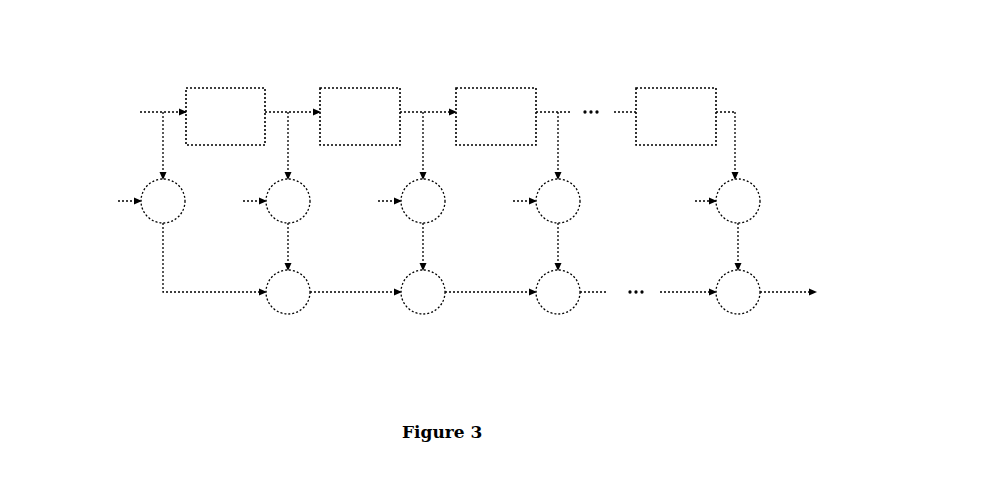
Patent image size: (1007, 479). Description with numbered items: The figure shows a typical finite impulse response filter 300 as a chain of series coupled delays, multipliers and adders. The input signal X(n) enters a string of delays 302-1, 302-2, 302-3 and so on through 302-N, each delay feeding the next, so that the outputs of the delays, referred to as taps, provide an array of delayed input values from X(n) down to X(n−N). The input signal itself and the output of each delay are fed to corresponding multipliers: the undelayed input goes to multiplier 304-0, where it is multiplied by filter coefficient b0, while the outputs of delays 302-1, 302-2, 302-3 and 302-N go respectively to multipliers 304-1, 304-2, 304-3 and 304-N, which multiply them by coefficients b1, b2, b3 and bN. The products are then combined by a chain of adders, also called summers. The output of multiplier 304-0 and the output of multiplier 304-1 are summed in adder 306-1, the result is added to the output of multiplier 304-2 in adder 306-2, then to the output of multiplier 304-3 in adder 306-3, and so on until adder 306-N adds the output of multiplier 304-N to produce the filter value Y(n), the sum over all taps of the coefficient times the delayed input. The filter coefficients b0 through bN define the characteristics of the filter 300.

The finite impulse response (FIR) filter 300 is at (87, 80).
The delay 302-1 is at (232, 88).
The delay 302-2 is at (360, 88).
The delay 302-3 is at (490, 88).
The delay 302-N is at (668, 88).
The multiplier 304-0 is at (150, 224).
The multiplier 304-1 is at (266, 215).
The multiplier 304-2 is at (412, 216).
The multiplier 304-3 is at (540, 213).
The multiplier 304-N is at (718, 212).
The adder 306-1 is at (270, 303).
The adder 306-2 is at (402, 303).
The adder 306-3 is at (535, 305).
The adder 306-N is at (718, 305).